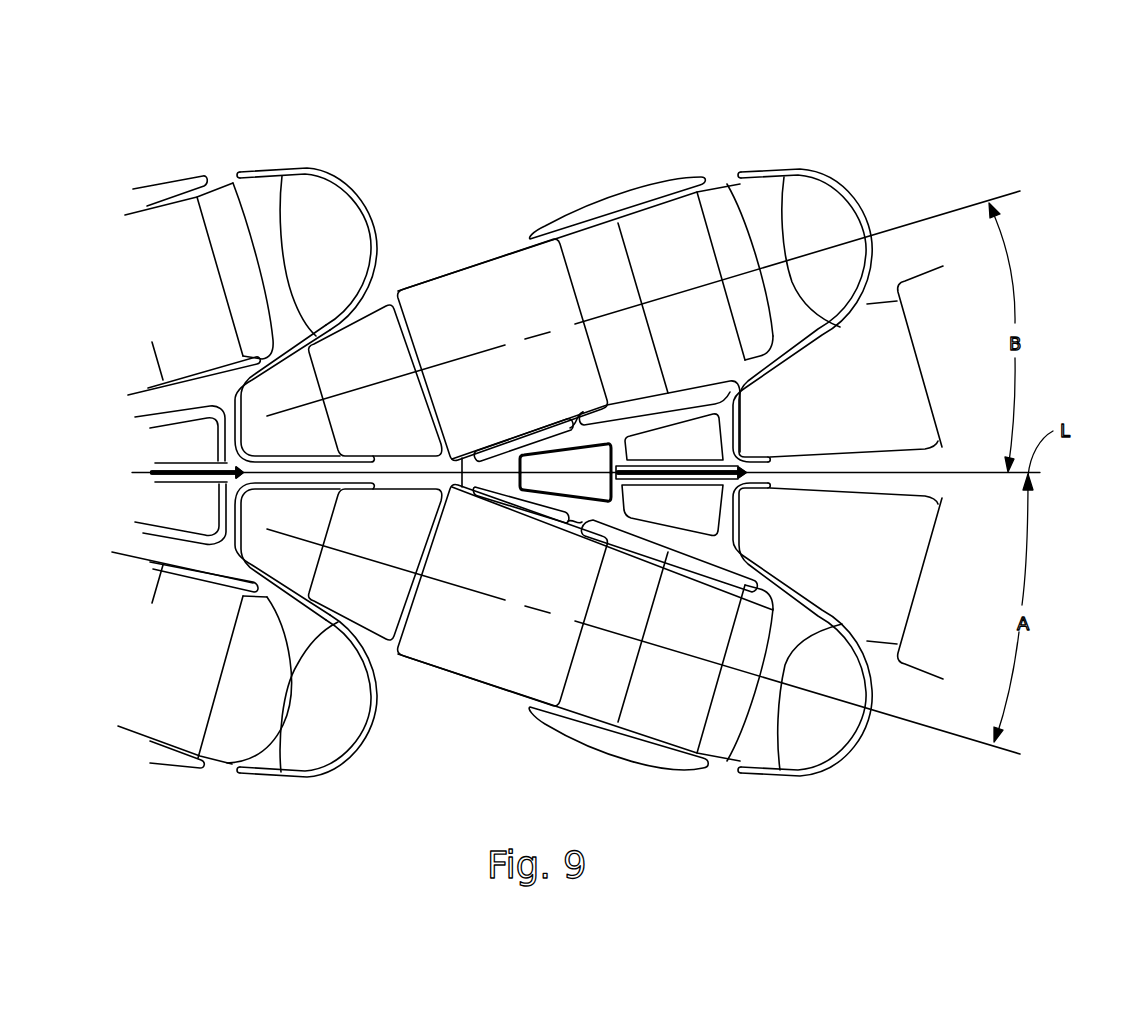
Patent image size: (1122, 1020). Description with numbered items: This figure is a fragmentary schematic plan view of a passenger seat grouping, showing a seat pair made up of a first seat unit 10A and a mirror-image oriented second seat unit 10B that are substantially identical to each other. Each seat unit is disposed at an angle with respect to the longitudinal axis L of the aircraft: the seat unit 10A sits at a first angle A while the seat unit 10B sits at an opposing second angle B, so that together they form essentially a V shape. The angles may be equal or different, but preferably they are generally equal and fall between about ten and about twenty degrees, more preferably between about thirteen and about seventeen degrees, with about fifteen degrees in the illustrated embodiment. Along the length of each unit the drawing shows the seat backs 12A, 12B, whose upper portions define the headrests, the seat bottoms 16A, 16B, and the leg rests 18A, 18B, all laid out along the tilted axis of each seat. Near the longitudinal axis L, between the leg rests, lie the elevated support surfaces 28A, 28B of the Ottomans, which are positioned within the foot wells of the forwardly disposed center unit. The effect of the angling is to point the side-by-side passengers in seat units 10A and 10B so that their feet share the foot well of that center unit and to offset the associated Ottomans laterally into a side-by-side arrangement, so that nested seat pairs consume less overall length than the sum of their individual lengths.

The seat unit 10A is at (727, 766).
The seat unit 10B is at (868, 208).
The seat back 12A is at (678, 700).
The seat back 12B is at (709, 343).
The seat bottom 16A is at (494, 648).
The seat bottom 16B is at (554, 397).
The leg rest 18A is at (371, 604).
The leg rest 18B is at (405, 430).
The elevated support surface 28A is at (253, 548).
The elevated support surface 28B is at (253, 409).